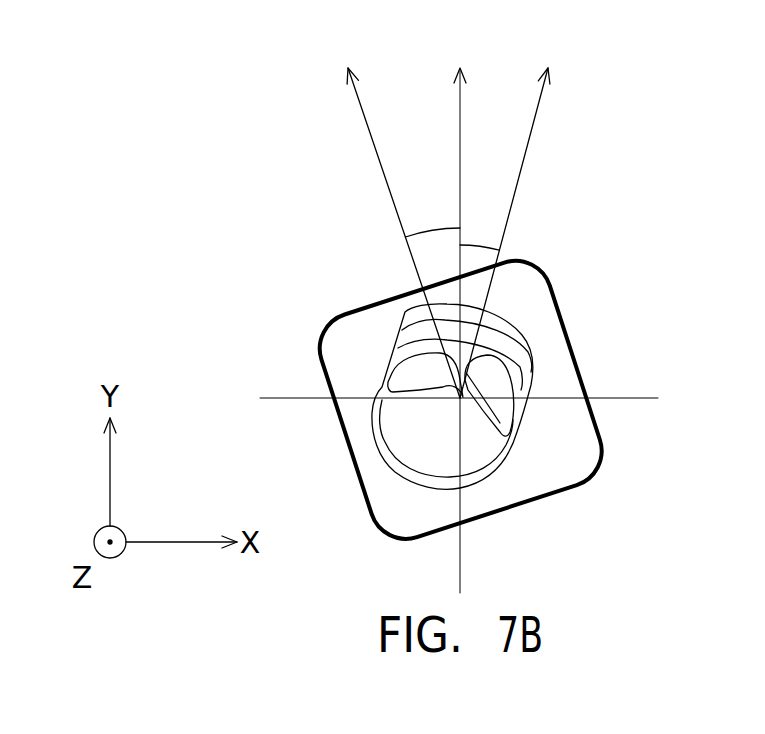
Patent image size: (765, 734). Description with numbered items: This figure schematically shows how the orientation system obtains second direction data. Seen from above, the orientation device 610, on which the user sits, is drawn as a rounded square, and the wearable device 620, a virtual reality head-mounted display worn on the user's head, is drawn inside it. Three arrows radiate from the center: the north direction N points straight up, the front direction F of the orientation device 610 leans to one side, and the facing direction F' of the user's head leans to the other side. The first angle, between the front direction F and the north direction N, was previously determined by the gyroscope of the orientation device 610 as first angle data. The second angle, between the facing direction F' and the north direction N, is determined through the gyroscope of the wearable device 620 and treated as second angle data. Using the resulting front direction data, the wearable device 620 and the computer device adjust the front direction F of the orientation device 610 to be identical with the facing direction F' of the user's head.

The orientation device 610 is at (562, 315).
The wearable device 620 is at (522, 412).
The north direction N is at (462, 306).
The front direction F is at (399, 209).
The facing direction of the user's head F' is at (518, 209).